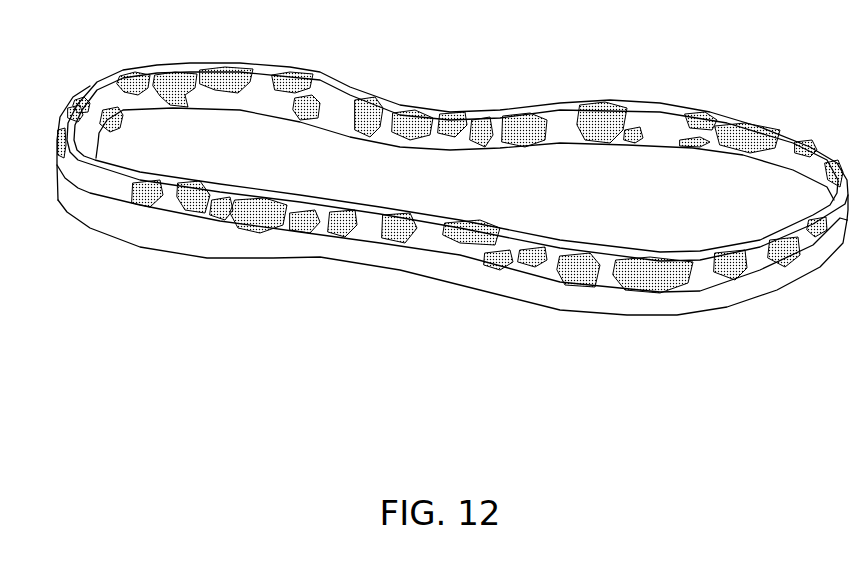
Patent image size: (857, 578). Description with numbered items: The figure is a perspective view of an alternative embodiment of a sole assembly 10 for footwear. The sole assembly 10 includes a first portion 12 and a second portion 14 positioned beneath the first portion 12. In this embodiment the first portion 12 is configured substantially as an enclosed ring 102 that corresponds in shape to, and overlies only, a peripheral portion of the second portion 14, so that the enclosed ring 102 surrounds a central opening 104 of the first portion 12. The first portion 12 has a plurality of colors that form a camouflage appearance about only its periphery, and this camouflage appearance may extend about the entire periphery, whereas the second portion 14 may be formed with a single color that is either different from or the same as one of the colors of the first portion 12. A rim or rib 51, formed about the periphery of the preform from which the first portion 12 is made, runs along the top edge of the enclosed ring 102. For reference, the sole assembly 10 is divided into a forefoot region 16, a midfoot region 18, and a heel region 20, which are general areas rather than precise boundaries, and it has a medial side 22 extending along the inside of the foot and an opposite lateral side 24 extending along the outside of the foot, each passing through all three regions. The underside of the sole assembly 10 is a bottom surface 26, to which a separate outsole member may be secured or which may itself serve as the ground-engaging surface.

The sole assembly 10 is at (758, 351).
The first portion 12 is at (657, 120).
The second portion 14 is at (157, 241).
The forefoot region 16 is at (738, 214).
The midfoot region 18 is at (428, 189).
The heel region 20 is at (151, 159).
The medial side 22 is at (510, 108).
The lateral side 24 is at (575, 298).
The bottom surface 26 is at (280, 260).
The rim or rib 51 is at (269, 72).
The enclosed ring 102 is at (395, 99).
The central opening 104 is at (582, 150).